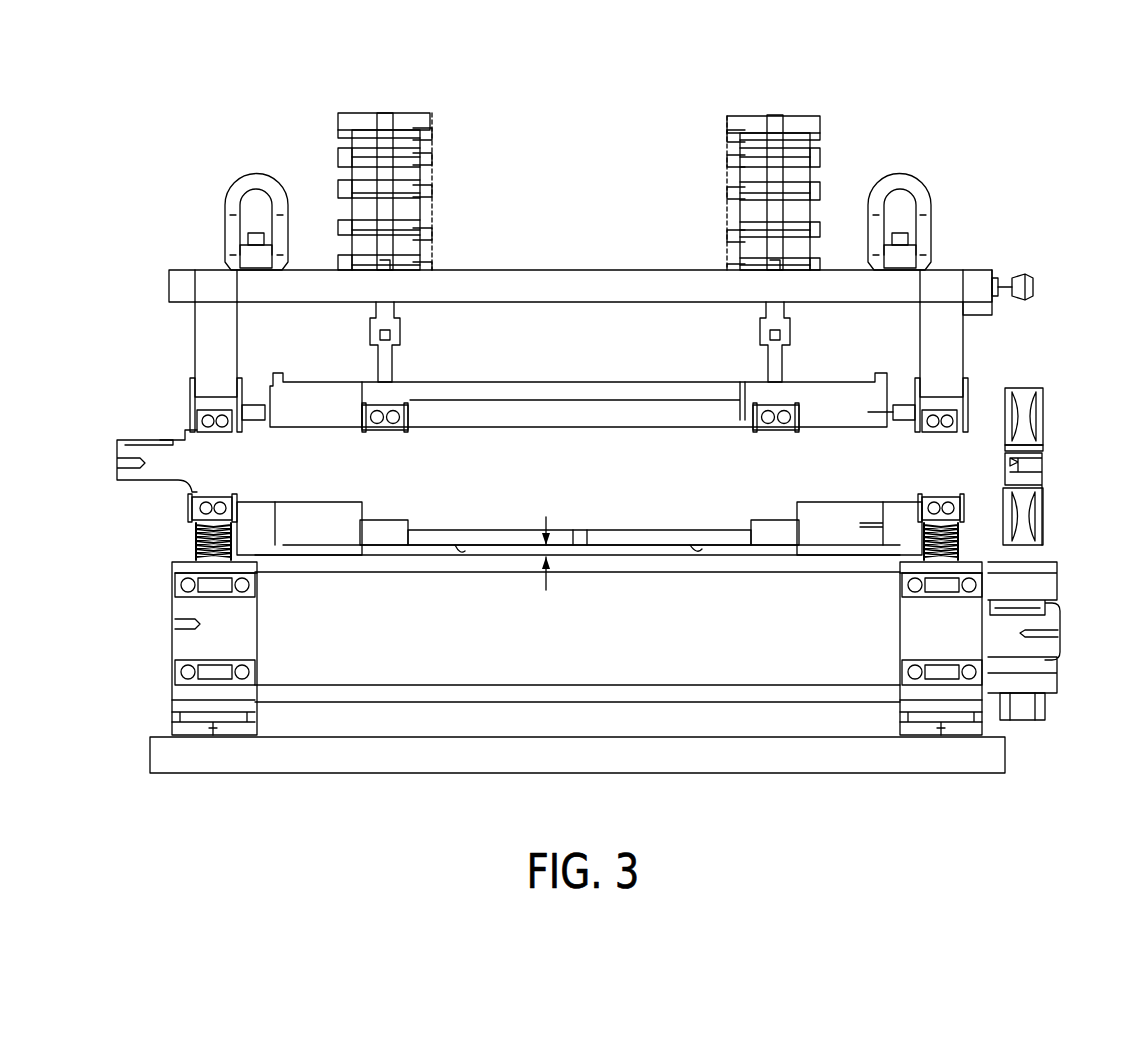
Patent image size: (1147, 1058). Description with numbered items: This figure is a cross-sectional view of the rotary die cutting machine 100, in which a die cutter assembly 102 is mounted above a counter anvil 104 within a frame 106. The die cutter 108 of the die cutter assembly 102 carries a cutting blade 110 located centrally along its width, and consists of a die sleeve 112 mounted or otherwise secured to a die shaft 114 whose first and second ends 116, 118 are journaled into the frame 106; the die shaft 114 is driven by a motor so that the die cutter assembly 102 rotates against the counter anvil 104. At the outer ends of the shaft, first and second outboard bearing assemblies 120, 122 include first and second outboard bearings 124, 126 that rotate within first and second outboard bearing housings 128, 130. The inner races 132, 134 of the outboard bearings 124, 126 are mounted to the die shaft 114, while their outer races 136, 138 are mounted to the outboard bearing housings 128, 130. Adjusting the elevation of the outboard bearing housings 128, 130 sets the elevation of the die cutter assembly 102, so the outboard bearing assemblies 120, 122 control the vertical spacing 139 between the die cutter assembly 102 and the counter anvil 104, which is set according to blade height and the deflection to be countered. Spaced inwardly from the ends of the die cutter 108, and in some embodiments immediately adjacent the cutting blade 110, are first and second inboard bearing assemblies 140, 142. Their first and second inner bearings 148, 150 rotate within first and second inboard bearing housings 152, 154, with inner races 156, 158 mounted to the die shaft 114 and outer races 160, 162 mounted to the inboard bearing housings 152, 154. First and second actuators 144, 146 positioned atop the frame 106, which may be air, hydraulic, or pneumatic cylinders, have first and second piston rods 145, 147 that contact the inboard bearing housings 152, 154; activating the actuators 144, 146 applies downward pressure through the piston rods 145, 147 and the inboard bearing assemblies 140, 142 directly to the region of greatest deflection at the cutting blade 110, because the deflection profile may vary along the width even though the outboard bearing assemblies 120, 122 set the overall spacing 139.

The rotary die cutting machine 100 is at (975, 106).
The die cutter assembly 102 is at (607, 378).
The counter anvil 104 is at (819, 646).
The frame 106 is at (950, 335).
The die cutter 108 is at (305, 373).
The cutting blade 110 is at (456, 553).
The die sleeve 112 is at (573, 393).
The die shaft 114 is at (600, 469).
The first end of the die shaft 116 is at (970, 465).
The second end of the die shaft 118 is at (203, 457).
The first outboard bearing assembly 120 is at (970, 406).
The second outboard bearing assembly 122 is at (182, 405).
The first outboard bearing 124 is at (953, 510).
The second outboard bearing 126 is at (200, 507).
The first outboard bearing housing 128 is at (958, 528).
The second outboard bearing housing 130 is at (212, 526).
The inner race of the first outboard bearing 132 is at (955, 497).
The inner race of the second outboard bearing 134 is at (192, 497).
The outer race of the first outboard bearing 136 is at (1022, 524).
The outer race of the second outboard bearing 138 is at (205, 515).
The vertical spacing 139 is at (546, 556).
The first inboard bearing assembly 140 is at (833, 357).
The second inboard bearing assembly 142 is at (352, 411).
The first actuator 144 is at (778, 125).
The first piston rod 145 is at (773, 365).
The second actuator 146 is at (392, 125).
The second piston rod 147 is at (427, 300).
The first inner bearing 148 is at (808, 404).
The second inner bearing 150 is at (383, 355).
The first inboard bearing housing 152 is at (774, 535).
The second inboard bearing housing 154 is at (382, 535).
The inner race of the first inboard bearing 156 is at (748, 437).
The inner race of the second inboard bearing 158 is at (400, 437).
The outer race of the first inboard bearing 160 is at (762, 413).
The outer race of the second inboard bearing 162 is at (412, 413).